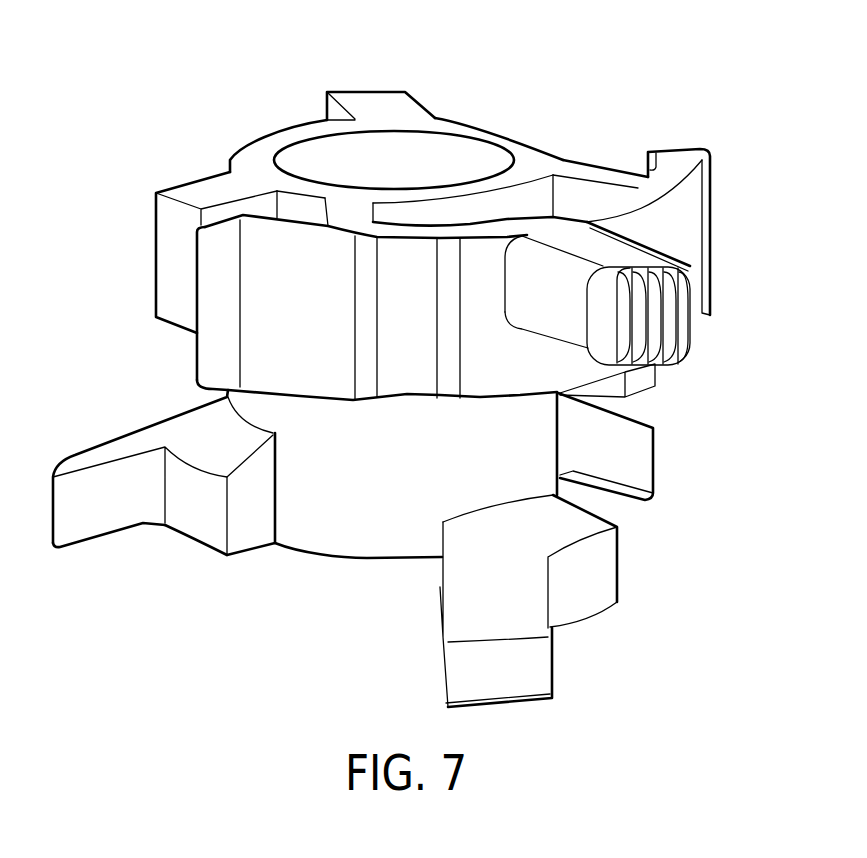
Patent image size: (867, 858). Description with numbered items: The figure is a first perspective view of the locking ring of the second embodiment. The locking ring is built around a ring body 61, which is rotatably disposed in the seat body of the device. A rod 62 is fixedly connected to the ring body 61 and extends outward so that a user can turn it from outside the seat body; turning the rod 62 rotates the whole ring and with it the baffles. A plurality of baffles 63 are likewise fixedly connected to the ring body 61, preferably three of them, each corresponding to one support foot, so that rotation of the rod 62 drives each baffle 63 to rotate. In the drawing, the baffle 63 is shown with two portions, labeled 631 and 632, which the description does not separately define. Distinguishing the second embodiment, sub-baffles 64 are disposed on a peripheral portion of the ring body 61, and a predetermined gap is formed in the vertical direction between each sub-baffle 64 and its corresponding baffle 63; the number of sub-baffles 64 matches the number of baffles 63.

The ring body 61 is at (270, 142).
The rod 62 is at (637, 255).
The baffle 63 is at (163, 533).
The first leg portion 631 is at (248, 533).
The second leg portion 632 is at (122, 510).
The sub-baffle 64 is at (378, 100).